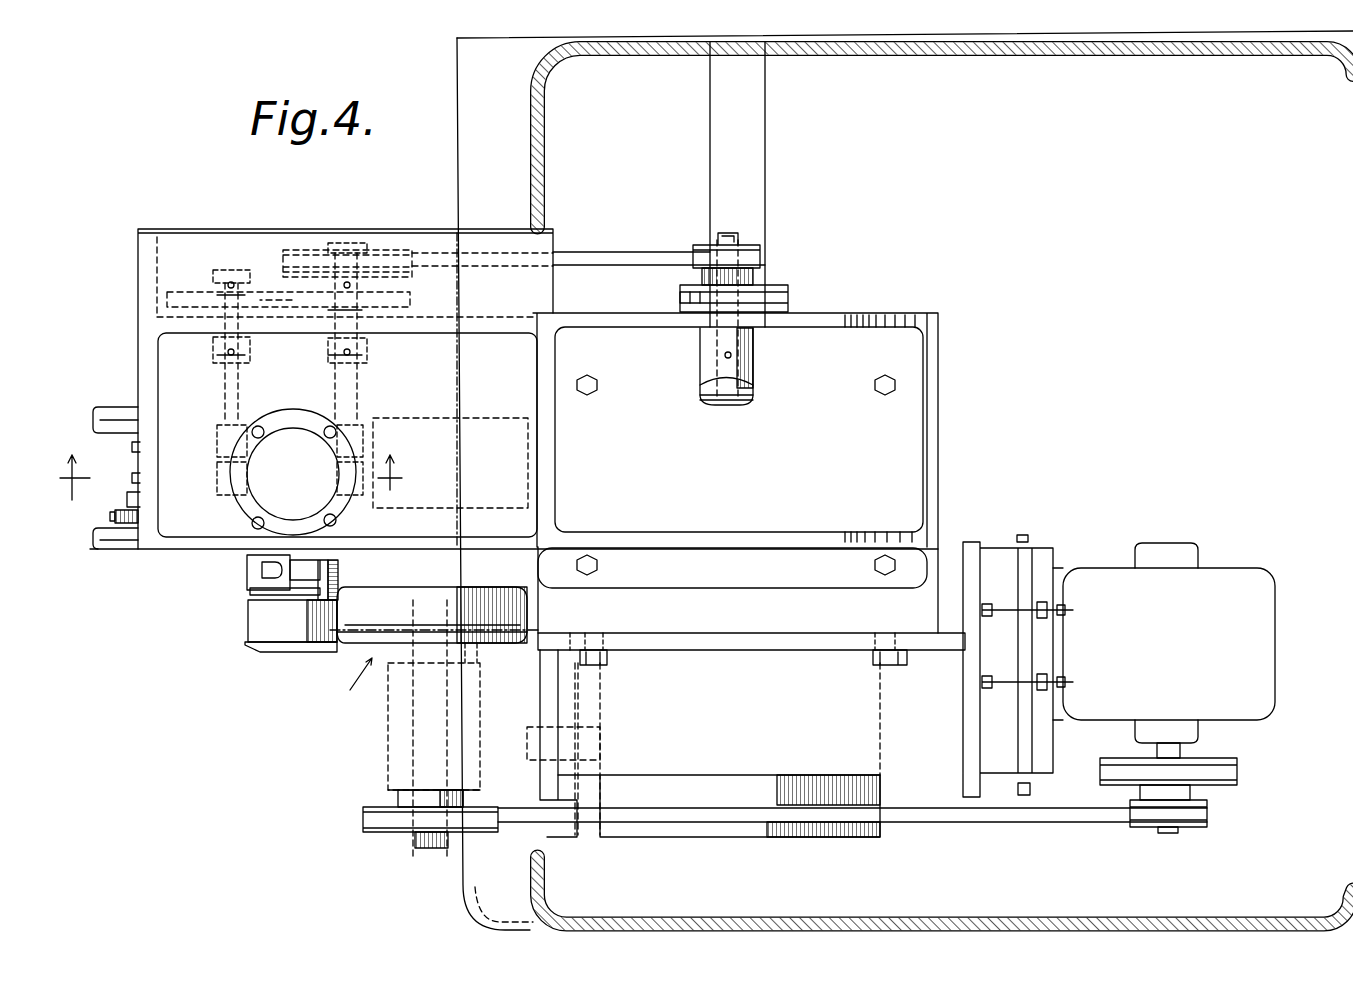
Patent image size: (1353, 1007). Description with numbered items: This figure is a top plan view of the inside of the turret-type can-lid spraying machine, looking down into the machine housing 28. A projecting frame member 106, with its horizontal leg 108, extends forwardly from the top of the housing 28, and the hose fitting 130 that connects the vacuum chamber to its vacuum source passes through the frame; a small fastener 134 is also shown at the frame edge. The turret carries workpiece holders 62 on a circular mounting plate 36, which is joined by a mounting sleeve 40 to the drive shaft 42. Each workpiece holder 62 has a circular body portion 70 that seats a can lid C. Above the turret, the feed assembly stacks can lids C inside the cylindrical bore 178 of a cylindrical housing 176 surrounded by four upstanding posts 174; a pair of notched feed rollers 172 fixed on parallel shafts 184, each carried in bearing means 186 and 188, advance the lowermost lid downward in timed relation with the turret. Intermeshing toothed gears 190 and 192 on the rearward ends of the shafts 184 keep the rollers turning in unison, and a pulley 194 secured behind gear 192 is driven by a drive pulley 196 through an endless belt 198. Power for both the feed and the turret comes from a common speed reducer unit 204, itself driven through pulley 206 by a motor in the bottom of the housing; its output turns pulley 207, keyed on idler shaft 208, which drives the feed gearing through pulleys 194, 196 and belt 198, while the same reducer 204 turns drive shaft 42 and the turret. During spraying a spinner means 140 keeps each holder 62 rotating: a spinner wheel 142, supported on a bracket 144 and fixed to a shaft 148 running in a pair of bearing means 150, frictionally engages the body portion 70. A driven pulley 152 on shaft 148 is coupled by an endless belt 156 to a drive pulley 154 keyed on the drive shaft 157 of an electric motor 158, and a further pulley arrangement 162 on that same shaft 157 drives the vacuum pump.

The machine housing 28 is at (851, 917).
The circular mounting plate 36 is at (340, 585).
The mounting sleeve 40 is at (495, 418).
The drive shaft 42 is at (532, 448).
The workpiece holder 62 is at (310, 630).
The circular body portion 70 is at (262, 620).
The can lid C is at (272, 650).
The projecting frame member 106 is at (479, 223).
The horizontal leg 108 is at (502, 334).
The hose fitting 130 is at (128, 500).
The screw 134 is at (128, 523).
The spinner means 140 is at (399, 716).
The spinner wheel 142 is at (480, 605).
The supporting bracket 144 is at (926, 786).
The rotatable shaft 148 is at (432, 848).
The bearing means 150 is at (395, 725).
The driven pulley 152 is at (383, 833).
The drive pulley 154 is at (1195, 830).
The endless belt 156 is at (1002, 825).
The drive shaft 157 is at (1168, 834).
The electric motor 158 is at (1255, 660).
The pulley arrangement 162 is at (1250, 770).
The feed rollers 172 is at (218, 485).
The upstanding posts 174 is at (266, 428).
The cylindrical housing 176 is at (245, 525).
The cylindrical bore 178 is at (292, 522).
The parallel shafts 184 is at (222, 402).
The bearing means 186 is at (216, 450).
The bearing means 188 is at (215, 357).
The toothed gear 190 is at (258, 297).
The toothed gear 192 is at (412, 300).
The pulley 194 is at (385, 250).
The drive pulley 196 is at (752, 258).
The endless belt 198 is at (598, 252).
The speed reducer unit 204 is at (960, 446).
The pulley 206 is at (794, 291).
The pulley 207 is at (680, 292).
The idler shaft 208 is at (740, 355).